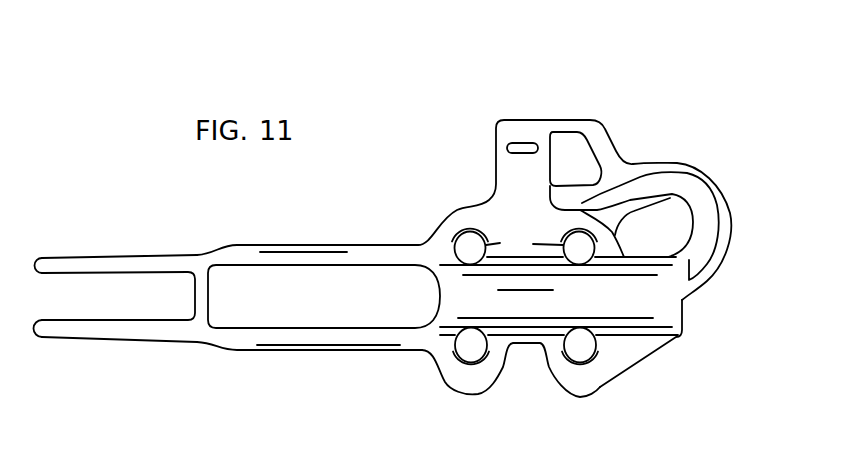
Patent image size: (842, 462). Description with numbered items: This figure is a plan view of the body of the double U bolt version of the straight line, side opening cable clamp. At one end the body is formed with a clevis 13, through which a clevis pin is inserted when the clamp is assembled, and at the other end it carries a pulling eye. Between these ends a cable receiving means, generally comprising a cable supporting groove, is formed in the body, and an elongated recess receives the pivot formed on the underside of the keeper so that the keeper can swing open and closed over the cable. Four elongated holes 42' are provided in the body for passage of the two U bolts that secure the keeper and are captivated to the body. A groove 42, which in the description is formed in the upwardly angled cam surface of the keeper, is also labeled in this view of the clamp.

The clevis 13 is at (67, 320).
The groove 42 is at (524, 239).
The elongated holes 42' is at (525, 377).